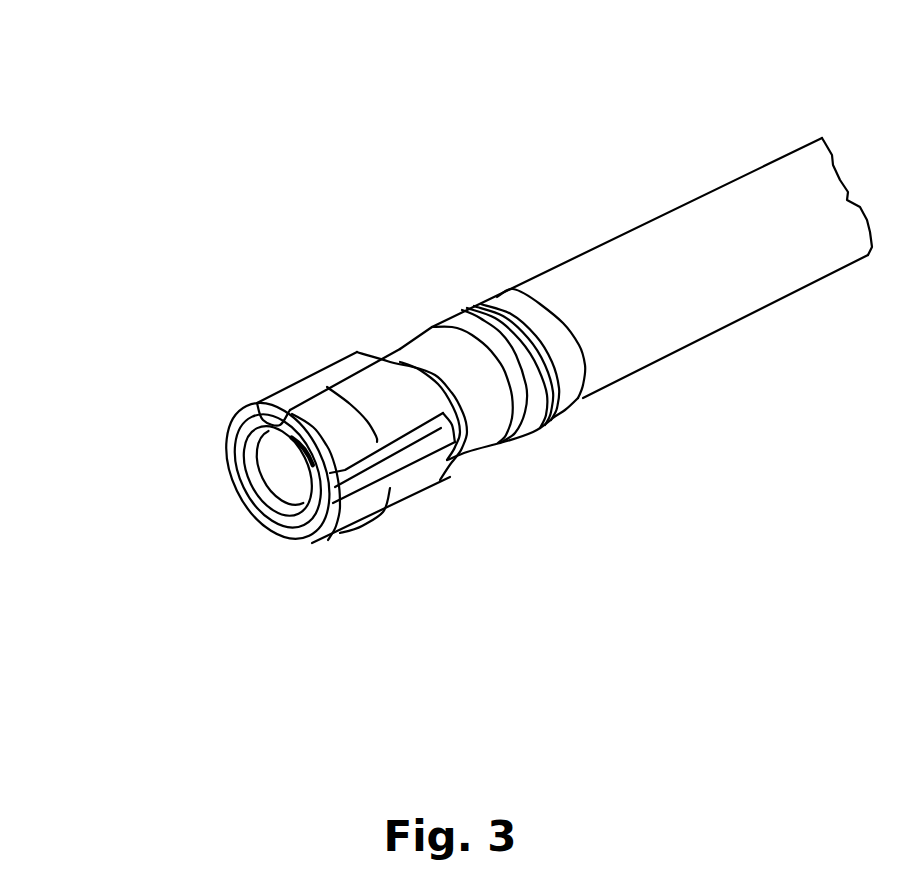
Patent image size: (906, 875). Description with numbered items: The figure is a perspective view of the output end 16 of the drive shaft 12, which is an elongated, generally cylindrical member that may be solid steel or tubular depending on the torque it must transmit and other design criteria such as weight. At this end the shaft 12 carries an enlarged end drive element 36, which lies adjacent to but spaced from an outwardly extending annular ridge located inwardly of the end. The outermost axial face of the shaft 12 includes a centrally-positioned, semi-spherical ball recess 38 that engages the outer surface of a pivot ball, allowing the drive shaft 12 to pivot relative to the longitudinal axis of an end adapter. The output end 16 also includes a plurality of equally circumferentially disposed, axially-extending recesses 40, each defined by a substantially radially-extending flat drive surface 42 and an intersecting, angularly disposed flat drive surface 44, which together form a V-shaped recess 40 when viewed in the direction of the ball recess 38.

The drive shaft 12 is at (583, 298).
The output end 16 is at (410, 385).
The enlarged end drive element 36 is at (430, 485).
The ball recess 38 is at (307, 470).
The axially-extending recess 40 is at (353, 480).
The radially-extending flat drive surface 42 is at (345, 527).
The angularly disposed flat drive surface 44 is at (290, 408).